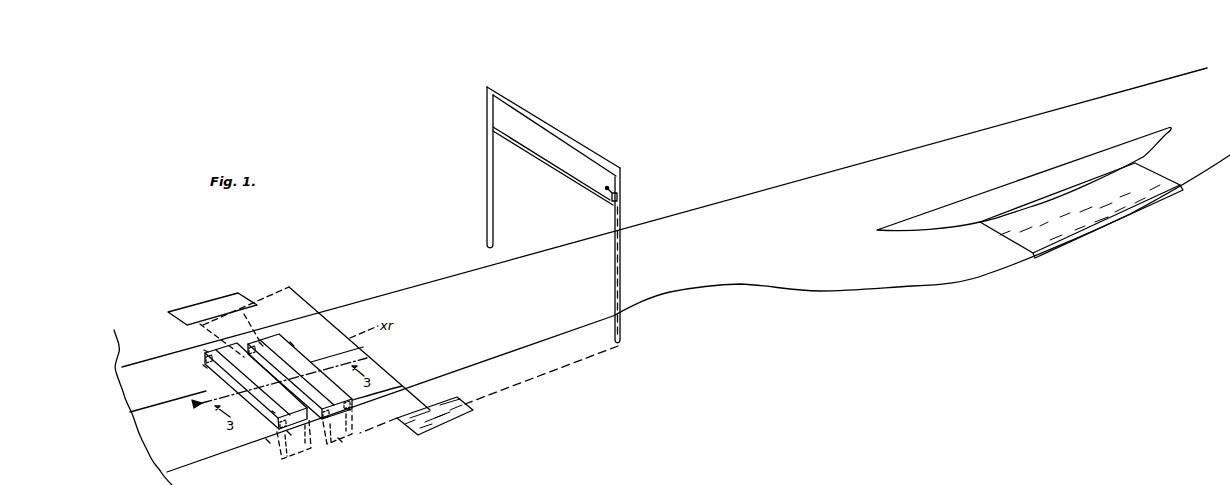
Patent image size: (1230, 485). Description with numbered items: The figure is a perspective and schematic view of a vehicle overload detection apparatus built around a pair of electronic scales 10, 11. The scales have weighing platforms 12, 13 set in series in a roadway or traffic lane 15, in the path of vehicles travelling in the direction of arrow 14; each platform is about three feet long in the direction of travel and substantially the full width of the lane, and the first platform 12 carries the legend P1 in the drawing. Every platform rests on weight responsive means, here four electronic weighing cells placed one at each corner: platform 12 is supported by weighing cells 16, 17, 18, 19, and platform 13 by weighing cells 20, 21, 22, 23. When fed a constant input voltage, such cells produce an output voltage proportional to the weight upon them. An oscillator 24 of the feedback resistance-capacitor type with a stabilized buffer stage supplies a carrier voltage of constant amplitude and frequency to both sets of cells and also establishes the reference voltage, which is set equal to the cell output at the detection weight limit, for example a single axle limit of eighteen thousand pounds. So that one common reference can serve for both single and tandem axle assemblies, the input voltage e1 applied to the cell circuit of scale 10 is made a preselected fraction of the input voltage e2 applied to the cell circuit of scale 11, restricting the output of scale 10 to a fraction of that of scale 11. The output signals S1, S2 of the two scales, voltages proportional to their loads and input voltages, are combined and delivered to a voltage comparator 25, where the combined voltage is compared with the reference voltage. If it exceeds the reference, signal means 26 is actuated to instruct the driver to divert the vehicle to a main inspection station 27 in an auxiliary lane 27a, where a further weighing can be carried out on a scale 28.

The electronic scale 10 is at (225, 385).
The electronic scale 11 is at (335, 349).
The weighing platform 12 is at (272, 411).
The weighing platform 13 is at (403, 384).
The arrow 14 is at (150, 418).
The roadway or traffic lane 15 is at (434, 291).
The electronic weighing cell 16 is at (204, 366).
The electronic weighing cell 17 is at (268, 441).
The electronic weighing cell 18 is at (289, 433).
The electronic weighing cell 19 is at (206, 350).
The electronic weighing cell 20 is at (262, 340).
The electronic weighing cell 21 is at (340, 440).
The electronic weighing cell 22 is at (355, 410).
The electronic weighing cell 23 is at (293, 344).
The oscillator 24 is at (202, 308).
The voltage comparator 25 is at (457, 416).
The signal means 26 is at (549, 123).
The main inspection station 27 is at (1138, 249).
The auxiliary lane 27a is at (937, 281).
The scale 28 is at (1143, 179).
The output signal of scale 10 S1 is at (331, 447).
The output signal of scale 11 S2 is at (380, 430).
The first pole piece P1 is at (227, 344).
The input voltage to weighing cells of scale 10 e1 is at (222, 337).
The input voltage to weighing cells of scale 11 e2 is at (262, 317).